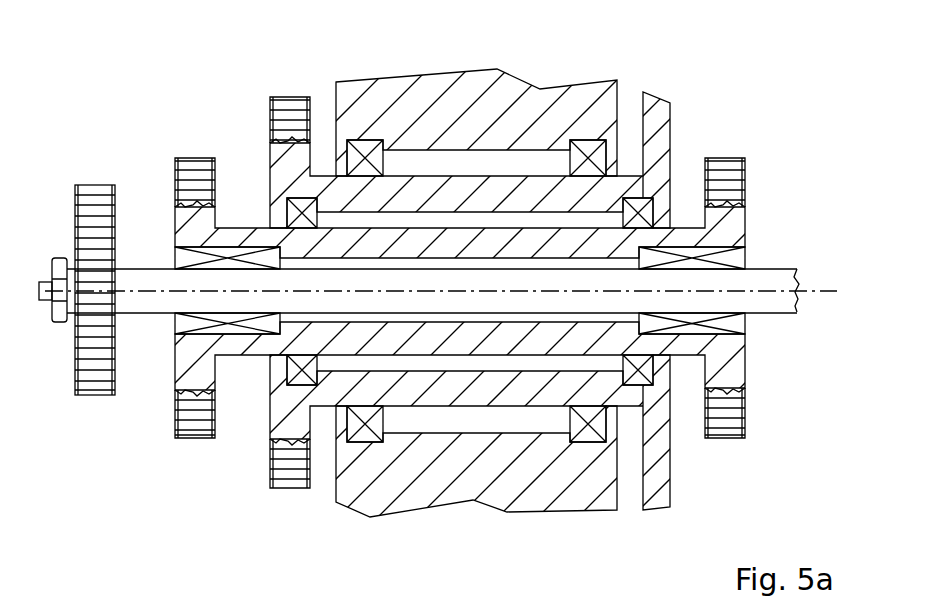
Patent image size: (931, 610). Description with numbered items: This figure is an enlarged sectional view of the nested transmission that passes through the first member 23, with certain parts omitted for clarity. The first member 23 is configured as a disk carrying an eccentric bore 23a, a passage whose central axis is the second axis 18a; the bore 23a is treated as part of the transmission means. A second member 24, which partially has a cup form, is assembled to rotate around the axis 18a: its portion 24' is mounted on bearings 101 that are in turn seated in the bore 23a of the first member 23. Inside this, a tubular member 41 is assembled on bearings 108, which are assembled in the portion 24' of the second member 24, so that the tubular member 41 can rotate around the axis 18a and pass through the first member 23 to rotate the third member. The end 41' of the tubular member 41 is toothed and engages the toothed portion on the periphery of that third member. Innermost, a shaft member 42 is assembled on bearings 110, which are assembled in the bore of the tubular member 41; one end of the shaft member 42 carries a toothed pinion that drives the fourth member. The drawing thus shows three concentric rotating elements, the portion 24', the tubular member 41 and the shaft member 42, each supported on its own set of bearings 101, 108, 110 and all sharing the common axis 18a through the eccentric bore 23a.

The second axis 18a is at (823, 292).
The first member 23 is at (473, 92).
The eccentric bore 23a is at (470, 432).
The second member 24 is at (510, 305).
The portion of second member 24' is at (465, 305).
The tubular member 41 is at (465, 305).
The end of tubular member 41' is at (742, 268).
The shaft member 42 is at (419, 363).
The bearings 101 is at (350, 160).
The bearings 108 is at (293, 213).
The bearings 110 is at (182, 258).